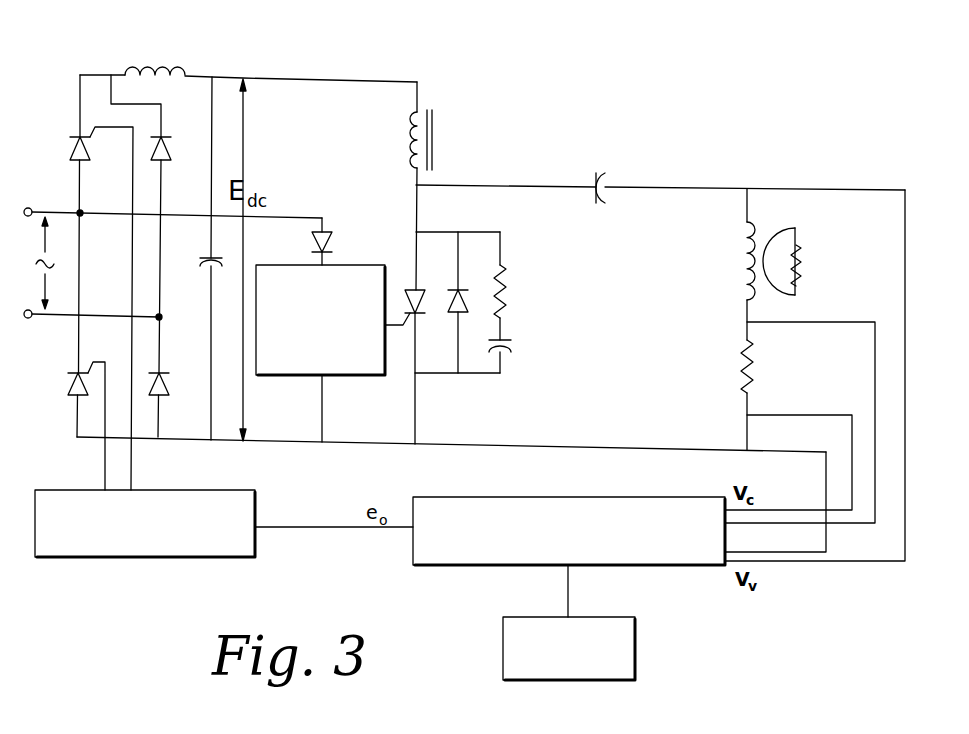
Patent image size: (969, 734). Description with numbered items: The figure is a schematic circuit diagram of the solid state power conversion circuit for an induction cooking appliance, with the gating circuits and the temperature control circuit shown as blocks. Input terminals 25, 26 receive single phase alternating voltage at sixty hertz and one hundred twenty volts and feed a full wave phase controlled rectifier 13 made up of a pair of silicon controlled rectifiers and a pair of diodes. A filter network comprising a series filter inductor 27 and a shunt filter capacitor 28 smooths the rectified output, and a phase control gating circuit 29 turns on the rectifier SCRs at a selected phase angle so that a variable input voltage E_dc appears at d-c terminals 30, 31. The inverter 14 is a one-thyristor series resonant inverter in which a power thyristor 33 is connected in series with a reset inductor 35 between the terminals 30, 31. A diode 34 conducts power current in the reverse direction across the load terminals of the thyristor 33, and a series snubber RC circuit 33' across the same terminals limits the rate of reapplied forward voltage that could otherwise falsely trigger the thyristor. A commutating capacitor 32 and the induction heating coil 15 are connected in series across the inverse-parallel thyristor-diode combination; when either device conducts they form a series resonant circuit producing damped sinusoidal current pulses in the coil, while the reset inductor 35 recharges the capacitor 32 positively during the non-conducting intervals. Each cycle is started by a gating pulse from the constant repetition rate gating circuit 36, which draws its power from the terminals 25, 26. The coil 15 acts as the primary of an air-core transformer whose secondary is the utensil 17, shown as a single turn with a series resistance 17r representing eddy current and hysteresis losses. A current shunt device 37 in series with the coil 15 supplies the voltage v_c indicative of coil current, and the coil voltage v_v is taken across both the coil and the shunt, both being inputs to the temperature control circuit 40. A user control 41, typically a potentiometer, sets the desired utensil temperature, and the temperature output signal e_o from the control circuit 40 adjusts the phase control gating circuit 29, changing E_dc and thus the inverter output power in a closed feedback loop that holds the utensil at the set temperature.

The full wave phase controlled rectifier 13 is at (58, 172).
The inverter 14 is at (482, 163).
The induction heating coil 15 is at (738, 263).
The utensil 17 is at (797, 228).
The series resistance 17r is at (802, 262).
The input terminal 25 is at (32, 210).
The input terminal 26 is at (32, 319).
The series filter inductor 27 is at (182, 68).
The shunt filter capacitor 28 is at (211, 268).
The phase control gating circuit 29 is at (63, 490).
The d-c terminal 30 is at (258, 80).
The d-c terminal 31 is at (236, 443).
The commutating capacitor 32 is at (610, 186).
The thyristor 33 is at (340, 341).
The series snubber RC circuit 33' is at (530, 302).
The diode 34 is at (449, 296).
The reset inductor 35 is at (404, 141).
The constant repetition rate gating circuit 36 is at (330, 263).
The current shunt device 37 is at (744, 374).
The temperature control circuit 40 is at (438, 497).
The user control 41 is at (503, 636).